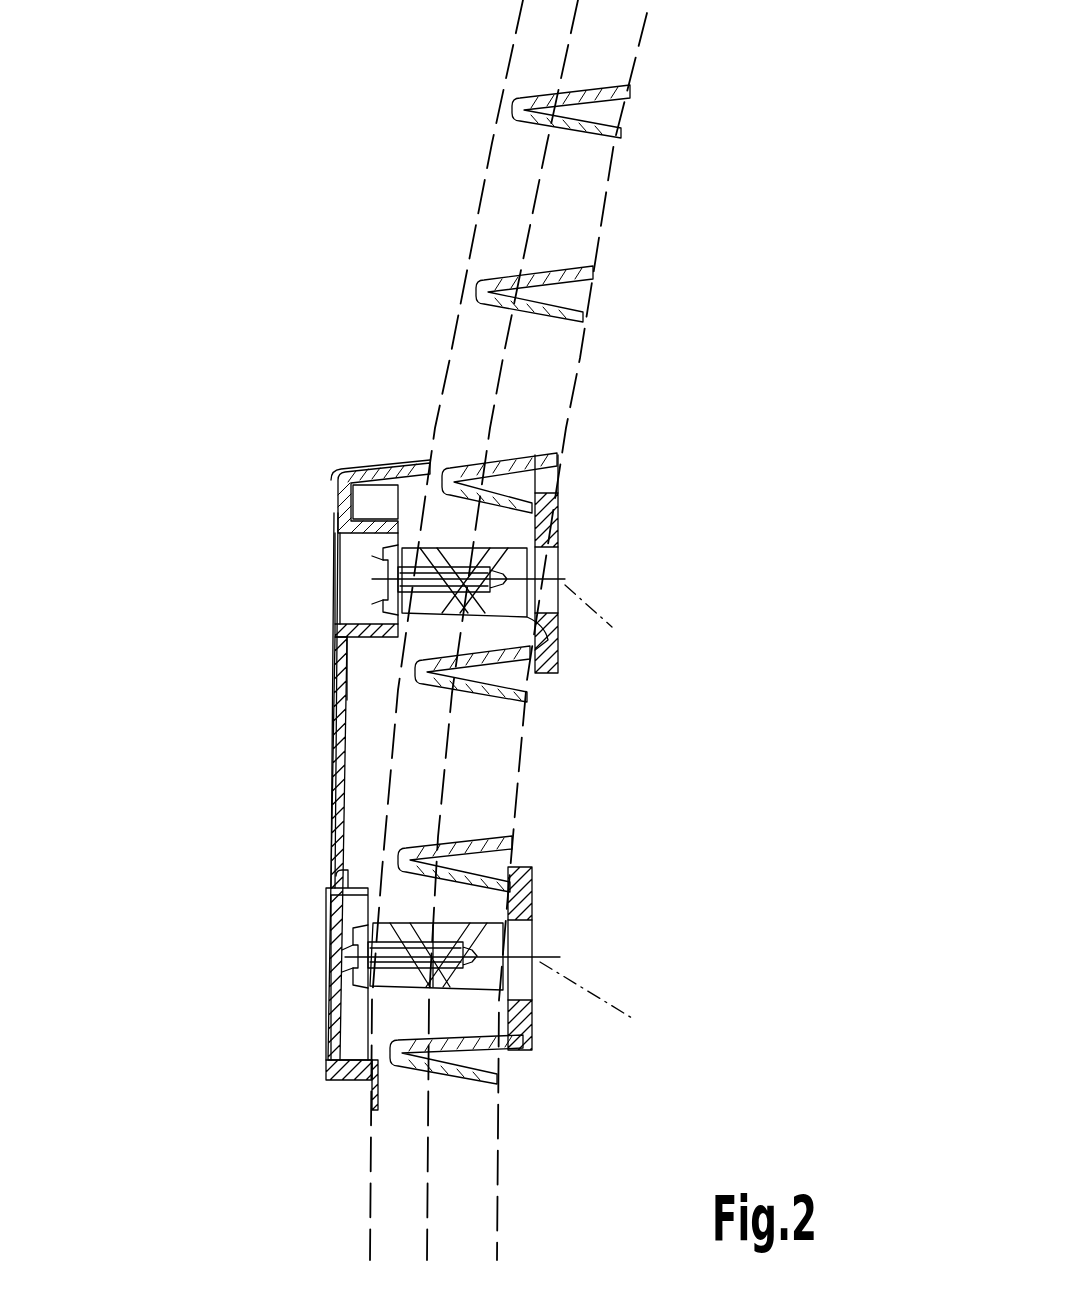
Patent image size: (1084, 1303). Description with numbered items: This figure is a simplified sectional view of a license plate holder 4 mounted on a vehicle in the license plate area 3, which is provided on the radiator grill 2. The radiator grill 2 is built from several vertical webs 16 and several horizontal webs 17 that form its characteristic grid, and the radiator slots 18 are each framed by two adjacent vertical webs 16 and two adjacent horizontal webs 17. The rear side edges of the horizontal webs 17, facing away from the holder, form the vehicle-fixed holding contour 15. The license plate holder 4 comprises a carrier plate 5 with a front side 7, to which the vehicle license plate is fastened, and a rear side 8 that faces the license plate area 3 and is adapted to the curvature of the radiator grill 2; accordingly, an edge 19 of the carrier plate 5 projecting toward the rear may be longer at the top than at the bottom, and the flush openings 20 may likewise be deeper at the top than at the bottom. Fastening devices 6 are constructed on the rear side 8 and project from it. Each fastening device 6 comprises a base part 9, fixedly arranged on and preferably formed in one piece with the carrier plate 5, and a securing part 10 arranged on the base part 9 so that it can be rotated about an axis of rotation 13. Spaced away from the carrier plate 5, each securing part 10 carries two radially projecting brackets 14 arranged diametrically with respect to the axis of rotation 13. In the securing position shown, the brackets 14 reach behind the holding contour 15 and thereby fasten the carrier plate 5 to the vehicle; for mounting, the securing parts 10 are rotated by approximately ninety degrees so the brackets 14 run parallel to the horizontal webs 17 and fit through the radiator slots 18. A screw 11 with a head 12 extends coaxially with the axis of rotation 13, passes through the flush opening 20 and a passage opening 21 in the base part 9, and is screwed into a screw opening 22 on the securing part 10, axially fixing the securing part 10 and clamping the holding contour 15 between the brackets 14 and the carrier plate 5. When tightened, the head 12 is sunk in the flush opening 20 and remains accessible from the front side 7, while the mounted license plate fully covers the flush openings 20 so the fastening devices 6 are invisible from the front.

The radiator grill 2 is at (480, 207).
The license plate area 3 is at (401, 412).
The license plate holder 4 is at (326, 826).
The carrier plate 5 is at (327, 730).
The fastening device 6 is at (376, 560).
The front side 7 is at (327, 790).
The rear side 8 is at (350, 772).
The base part 9 is at (335, 622).
The securing part 10 is at (562, 540).
The screw 11 is at (440, 548).
The head 12 is at (380, 590).
The axis of rotation 13 is at (606, 815).
The bracket 14 is at (565, 510).
The holding contour 15 is at (540, 500).
The vertical web 16 is at (615, 196).
The horizontal web 17 is at (622, 78).
The radiator slot 18 is at (586, 230).
The edge 19 is at (385, 468).
The flush opening 20 is at (340, 522).
The passage opening 21 is at (432, 522).
The screw opening 22 is at (560, 580).